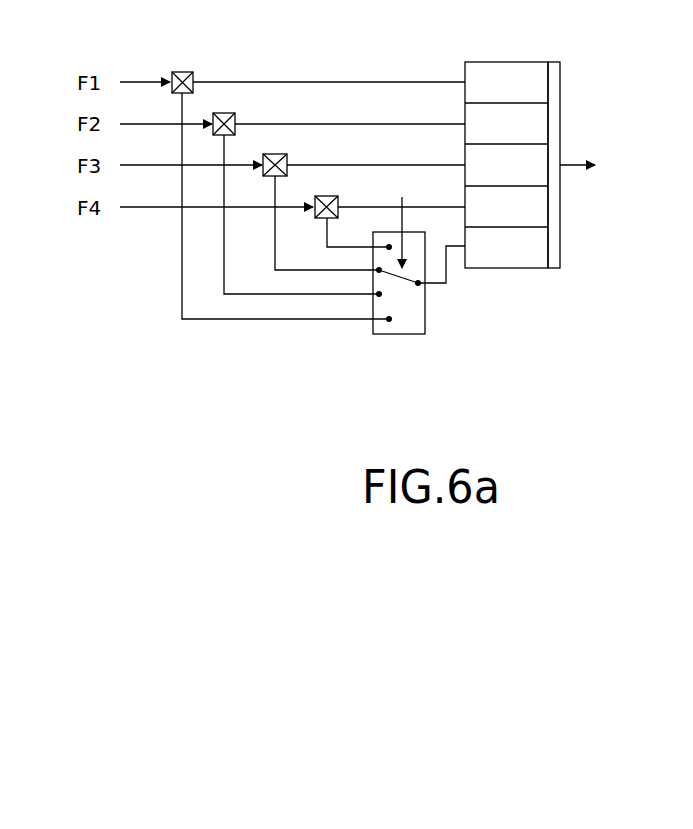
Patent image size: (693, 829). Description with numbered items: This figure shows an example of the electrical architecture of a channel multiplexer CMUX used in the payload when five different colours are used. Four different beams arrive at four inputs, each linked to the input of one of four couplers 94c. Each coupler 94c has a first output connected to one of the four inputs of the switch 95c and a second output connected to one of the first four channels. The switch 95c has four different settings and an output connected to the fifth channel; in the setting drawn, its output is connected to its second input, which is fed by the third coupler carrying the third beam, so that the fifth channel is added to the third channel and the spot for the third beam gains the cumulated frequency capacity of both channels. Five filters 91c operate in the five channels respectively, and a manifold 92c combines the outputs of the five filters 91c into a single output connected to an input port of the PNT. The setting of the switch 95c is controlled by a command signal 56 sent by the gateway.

The coupler 94c is at (188, 72).
The filter 91c is at (490, 62).
The manifold 92c is at (560, 127).
The switch 95c is at (393, 334).
The command signal 56 is at (401, 219).